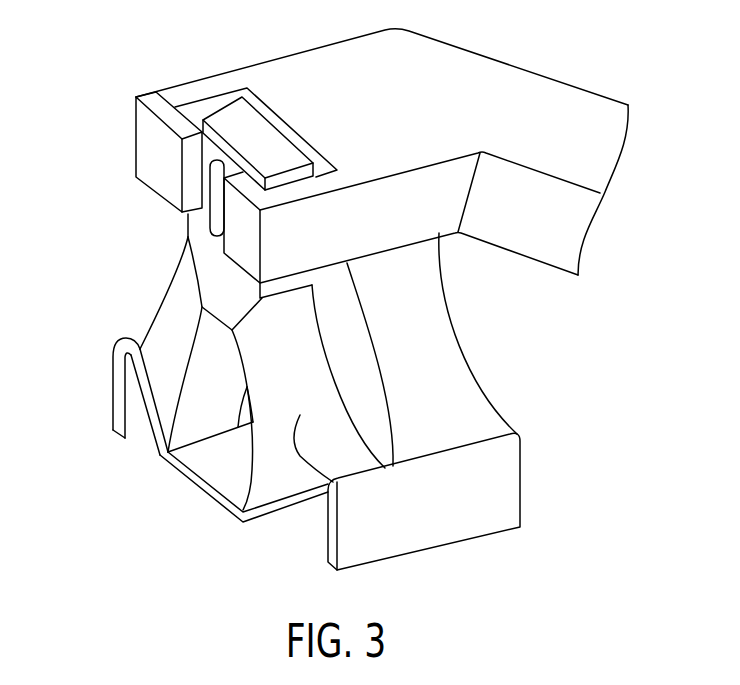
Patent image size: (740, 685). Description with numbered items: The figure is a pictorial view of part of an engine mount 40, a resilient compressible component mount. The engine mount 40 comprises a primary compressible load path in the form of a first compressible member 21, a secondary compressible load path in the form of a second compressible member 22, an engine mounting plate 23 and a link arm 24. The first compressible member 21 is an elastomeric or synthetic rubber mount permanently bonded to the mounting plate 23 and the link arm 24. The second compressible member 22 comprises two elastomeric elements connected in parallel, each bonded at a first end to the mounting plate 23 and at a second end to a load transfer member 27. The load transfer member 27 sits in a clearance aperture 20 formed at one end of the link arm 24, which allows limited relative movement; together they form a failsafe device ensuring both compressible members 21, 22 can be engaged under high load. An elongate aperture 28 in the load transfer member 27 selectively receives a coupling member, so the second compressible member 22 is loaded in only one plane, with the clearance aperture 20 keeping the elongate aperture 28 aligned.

The engine mount 40 is at (118, 270).
The link arm 24 is at (553, 84).
The clearance aperture 20 is at (180, 108).
The load transfer member 27 is at (233, 112).
The elongate aperture 28 is at (216, 158).
The second compressible member 22 is at (158, 333).
The first compressible member 21 is at (449, 332).
The engine mounting plate 23 is at (488, 536).